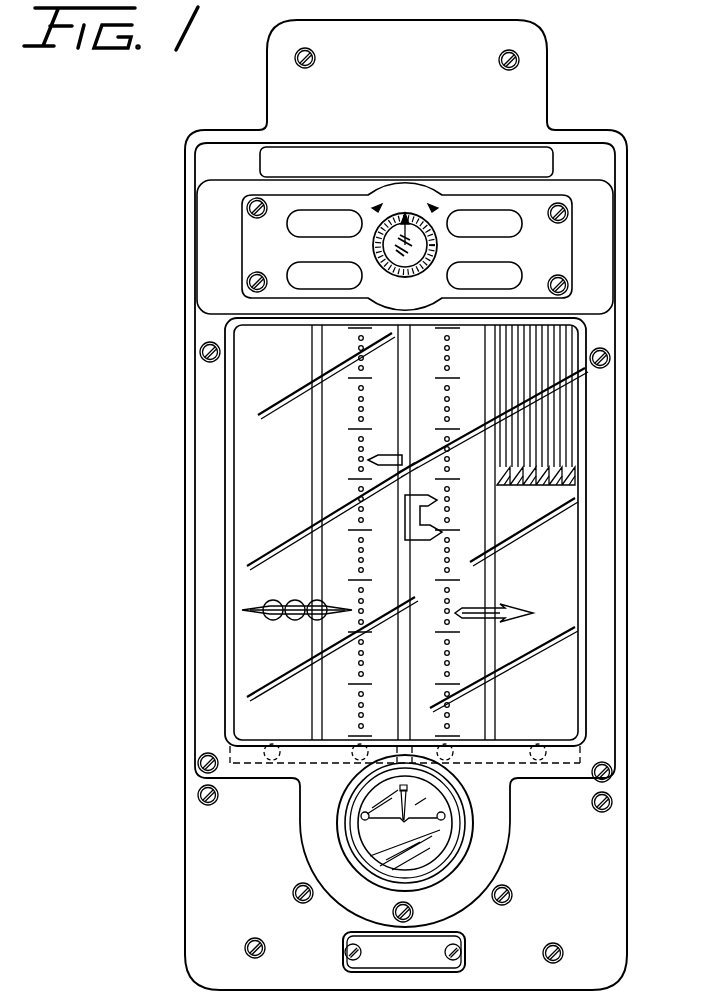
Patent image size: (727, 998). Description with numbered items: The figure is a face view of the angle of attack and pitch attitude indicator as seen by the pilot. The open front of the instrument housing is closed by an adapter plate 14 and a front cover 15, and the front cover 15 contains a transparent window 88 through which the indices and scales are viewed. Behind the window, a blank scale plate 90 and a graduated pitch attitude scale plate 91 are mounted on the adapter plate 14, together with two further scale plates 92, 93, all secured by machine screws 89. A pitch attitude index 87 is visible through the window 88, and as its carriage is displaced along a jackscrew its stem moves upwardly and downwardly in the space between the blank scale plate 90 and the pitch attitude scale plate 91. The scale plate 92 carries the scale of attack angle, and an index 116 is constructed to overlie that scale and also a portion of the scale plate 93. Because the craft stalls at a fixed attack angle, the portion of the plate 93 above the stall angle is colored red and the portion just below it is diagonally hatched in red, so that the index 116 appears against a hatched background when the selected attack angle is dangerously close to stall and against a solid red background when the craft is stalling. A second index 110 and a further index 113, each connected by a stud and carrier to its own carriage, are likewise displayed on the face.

The adapter plate 14 is at (612, 865).
The front cover 15 is at (605, 705).
The pitch attitude index 87 is at (272, 618).
The transparent window 88 is at (290, 361).
The machine screws 89 is at (262, 762).
The blank scale plate 90 is at (240, 435).
The graduated pitch attitude scale plate 91 is at (327, 441).
The scale plate 92 is at (475, 502).
The scale plate 93 is at (563, 522).
The second index 110 is at (368, 460).
The index 113 is at (430, 540).
The index 116 is at (500, 620).